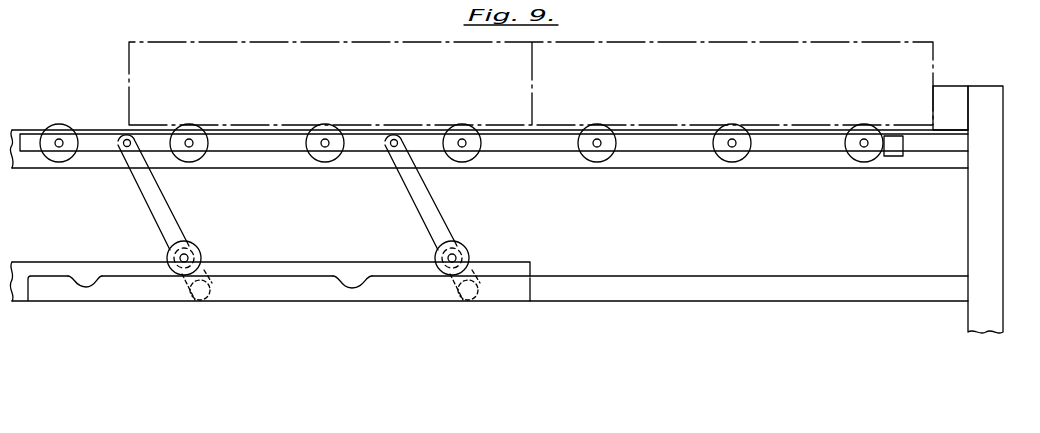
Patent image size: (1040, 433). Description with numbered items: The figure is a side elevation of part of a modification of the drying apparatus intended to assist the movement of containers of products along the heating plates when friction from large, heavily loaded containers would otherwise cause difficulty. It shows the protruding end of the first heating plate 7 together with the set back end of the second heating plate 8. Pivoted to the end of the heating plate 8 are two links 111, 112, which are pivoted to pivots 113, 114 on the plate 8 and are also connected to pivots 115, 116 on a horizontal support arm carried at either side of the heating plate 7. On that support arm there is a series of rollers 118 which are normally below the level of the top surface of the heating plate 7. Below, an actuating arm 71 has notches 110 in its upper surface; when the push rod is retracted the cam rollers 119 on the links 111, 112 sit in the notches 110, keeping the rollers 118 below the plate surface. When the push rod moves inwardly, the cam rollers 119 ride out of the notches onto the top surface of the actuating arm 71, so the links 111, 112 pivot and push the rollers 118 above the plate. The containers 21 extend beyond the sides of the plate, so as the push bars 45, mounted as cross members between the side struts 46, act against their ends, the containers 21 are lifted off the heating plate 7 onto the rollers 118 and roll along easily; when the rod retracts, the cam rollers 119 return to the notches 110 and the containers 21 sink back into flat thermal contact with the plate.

The first heating plate 7 is at (946, 157).
The second heating plate 8 is at (37, 268).
The containers 21 is at (795, 56).
The push bars 45 is at (953, 90).
The side struts 46 is at (995, 92).
The actuating arm 71 is at (795, 282).
The notches 110 is at (88, 285).
The link 111 is at (148, 193).
The link 112 is at (433, 219).
The pivot 113 is at (214, 268).
The pivot 114 is at (488, 268).
The pivot 115 is at (124, 134).
The pivot 116 is at (393, 155).
The rollers 118 is at (59, 129).
The cam rollers 119 is at (200, 253).